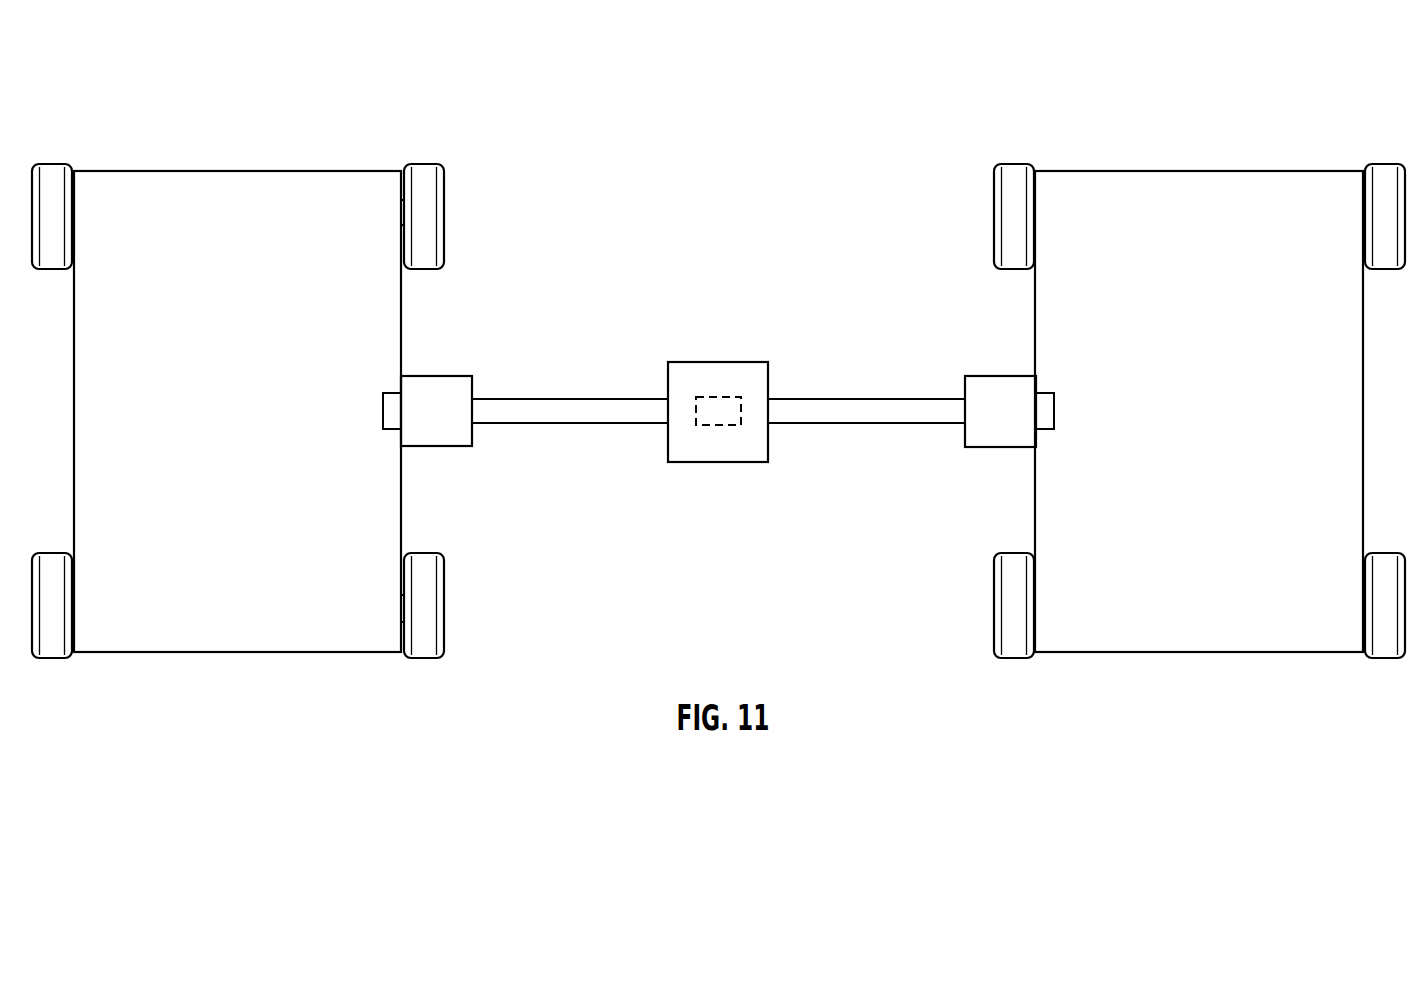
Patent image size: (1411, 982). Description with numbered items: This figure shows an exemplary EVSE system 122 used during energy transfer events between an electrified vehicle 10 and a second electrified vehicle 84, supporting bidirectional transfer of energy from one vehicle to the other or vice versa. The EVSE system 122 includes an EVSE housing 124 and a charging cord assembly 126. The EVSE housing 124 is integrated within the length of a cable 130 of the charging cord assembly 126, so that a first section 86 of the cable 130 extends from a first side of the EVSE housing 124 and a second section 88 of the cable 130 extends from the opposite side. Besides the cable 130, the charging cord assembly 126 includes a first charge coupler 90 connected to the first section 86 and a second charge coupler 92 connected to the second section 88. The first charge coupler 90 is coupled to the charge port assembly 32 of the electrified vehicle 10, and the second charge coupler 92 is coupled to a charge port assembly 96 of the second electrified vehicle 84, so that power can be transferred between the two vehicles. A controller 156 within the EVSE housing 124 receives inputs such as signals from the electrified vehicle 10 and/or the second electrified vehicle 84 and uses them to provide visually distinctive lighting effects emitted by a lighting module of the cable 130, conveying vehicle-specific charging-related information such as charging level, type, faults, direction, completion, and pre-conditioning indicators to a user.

The electrified vehicle 10 is at (238, 172).
The second electrified vehicle 84 is at (1212, 172).
The charge port assembly 32 is at (382, 411).
The first charge coupler 90 is at (436, 376).
The first section 86 is at (561, 398).
The second section 88 is at (855, 398).
The second charge coupler 92 is at (1004, 388).
The charge port assembly 96 is at (1056, 409).
The EVSE system 122 is at (718, 358).
The EVSE housing 124 is at (718, 362).
The charging cord assembly 126 is at (557, 442).
The cable 130 is at (639, 426).
The controller 156 is at (720, 426).